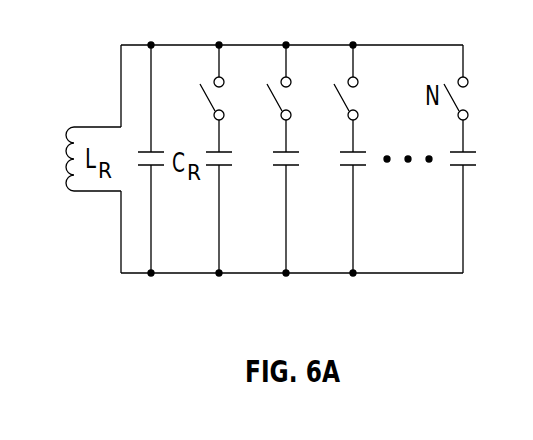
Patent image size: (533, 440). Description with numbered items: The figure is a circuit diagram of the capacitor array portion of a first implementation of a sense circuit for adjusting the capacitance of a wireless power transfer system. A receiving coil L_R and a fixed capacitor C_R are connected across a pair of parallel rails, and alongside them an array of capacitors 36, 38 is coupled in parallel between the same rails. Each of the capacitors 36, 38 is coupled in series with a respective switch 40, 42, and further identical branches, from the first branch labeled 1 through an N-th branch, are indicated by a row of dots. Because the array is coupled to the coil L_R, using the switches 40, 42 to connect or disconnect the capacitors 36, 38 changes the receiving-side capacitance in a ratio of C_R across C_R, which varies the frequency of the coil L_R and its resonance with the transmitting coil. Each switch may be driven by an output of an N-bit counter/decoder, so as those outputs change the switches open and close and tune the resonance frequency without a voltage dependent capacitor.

The first switched capacitor cell 1 is at (224, 159).
The capacitor 36 is at (280, 167).
The capacitor 38 is at (347, 167).
The switch 40 is at (292, 81).
The switch 42 is at (359, 82).